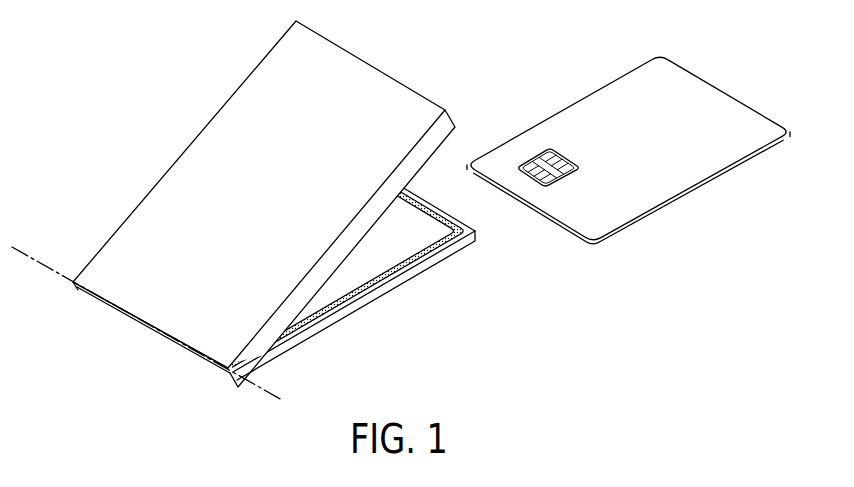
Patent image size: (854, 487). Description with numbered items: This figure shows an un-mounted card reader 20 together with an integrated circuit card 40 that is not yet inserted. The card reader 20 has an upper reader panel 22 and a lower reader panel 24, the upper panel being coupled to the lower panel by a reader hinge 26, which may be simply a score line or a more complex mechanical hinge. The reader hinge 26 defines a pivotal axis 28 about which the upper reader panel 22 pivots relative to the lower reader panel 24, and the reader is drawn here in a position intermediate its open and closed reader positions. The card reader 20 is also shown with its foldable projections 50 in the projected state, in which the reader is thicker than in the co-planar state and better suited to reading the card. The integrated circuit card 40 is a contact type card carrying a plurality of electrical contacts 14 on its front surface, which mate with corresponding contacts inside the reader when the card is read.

The card reader 20 is at (123, 361).
The upper reader panel 22 is at (261, 69).
The lower reader panel 24 is at (430, 265).
The reader hinge 26 is at (193, 376).
The pivotal axis 28 is at (22, 242).
The foldable projections 50 is at (413, 153).
The integrated circuit card 40 is at (730, 160).
The electrical contacts 14 is at (551, 132).